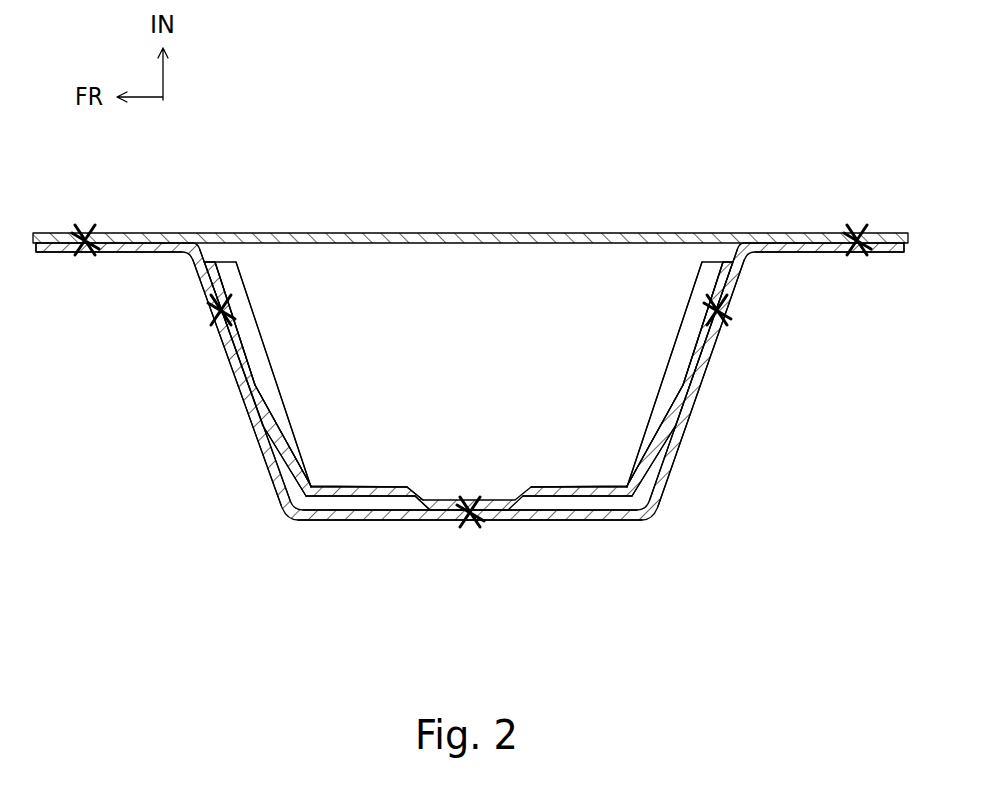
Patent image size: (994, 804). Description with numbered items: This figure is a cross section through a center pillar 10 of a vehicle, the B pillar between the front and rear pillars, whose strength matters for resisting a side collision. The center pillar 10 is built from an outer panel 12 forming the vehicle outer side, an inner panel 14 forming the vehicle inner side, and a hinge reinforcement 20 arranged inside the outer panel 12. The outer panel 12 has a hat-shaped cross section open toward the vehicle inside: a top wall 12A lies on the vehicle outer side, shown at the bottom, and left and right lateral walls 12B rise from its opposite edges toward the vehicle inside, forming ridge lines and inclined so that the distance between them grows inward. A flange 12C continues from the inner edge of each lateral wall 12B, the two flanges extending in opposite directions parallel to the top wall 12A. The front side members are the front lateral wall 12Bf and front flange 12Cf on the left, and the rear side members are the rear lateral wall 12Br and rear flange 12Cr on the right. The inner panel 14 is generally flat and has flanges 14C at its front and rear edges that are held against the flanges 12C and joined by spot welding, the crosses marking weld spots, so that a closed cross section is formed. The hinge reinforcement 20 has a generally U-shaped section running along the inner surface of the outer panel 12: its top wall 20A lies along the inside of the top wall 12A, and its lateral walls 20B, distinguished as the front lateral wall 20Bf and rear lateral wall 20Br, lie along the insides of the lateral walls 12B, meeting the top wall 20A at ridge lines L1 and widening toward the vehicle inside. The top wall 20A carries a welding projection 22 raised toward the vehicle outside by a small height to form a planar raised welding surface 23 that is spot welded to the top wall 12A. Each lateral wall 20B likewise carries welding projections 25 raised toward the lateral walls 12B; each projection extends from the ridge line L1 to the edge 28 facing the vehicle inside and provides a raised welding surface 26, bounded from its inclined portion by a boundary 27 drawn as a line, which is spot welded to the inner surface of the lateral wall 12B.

The center pillar 10 is at (327, 642).
The outer panel 12 is at (555, 521).
The top wall 12A is at (405, 521).
The lateral walls 12B is at (258, 453).
The front lateral wall 12Bf is at (217, 386).
The rear lateral wall 12Br is at (696, 393).
The flanges 12C is at (78, 254).
The front flange 12Cf is at (100, 302).
The rear flange 12Cr is at (862, 254).
The inner panel 14 is at (487, 226).
The flanges 14C is at (78, 232).
The hinge reinforcement 20 is at (387, 478).
The top wall 20A is at (535, 486).
The lateral walls 20B is at (277, 378).
The front lateral wall 20Bf is at (333, 374).
The rear lateral wall 20Br is at (663, 378).
The welding projection 22 is at (428, 492).
The raised welding surface 23 is at (508, 497).
The welding projections 25 is at (253, 393).
The raised welding surface 26 is at (238, 352).
The boundary 27 is at (263, 430).
The edge 28 is at (207, 256).
The ridge lines L1 is at (305, 520).